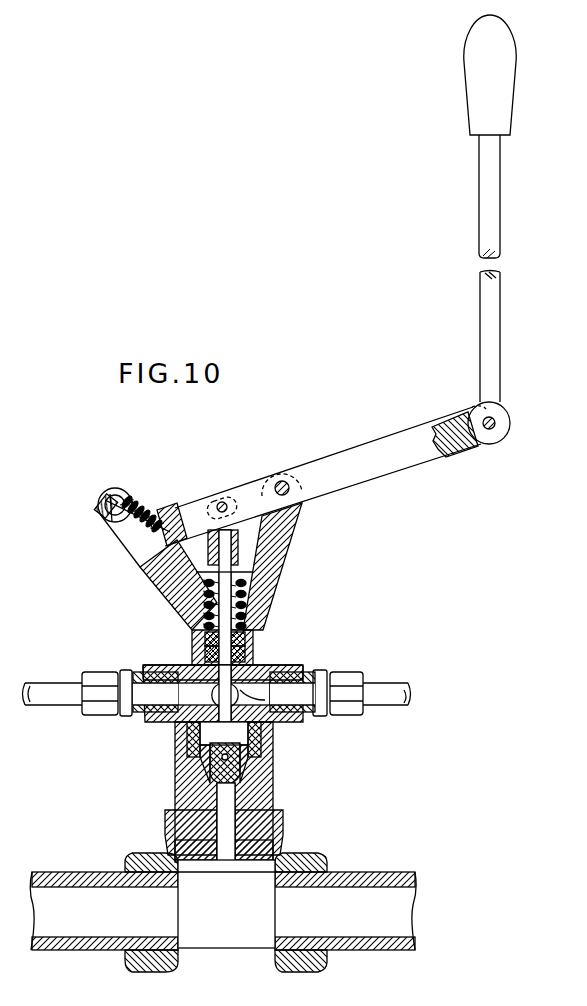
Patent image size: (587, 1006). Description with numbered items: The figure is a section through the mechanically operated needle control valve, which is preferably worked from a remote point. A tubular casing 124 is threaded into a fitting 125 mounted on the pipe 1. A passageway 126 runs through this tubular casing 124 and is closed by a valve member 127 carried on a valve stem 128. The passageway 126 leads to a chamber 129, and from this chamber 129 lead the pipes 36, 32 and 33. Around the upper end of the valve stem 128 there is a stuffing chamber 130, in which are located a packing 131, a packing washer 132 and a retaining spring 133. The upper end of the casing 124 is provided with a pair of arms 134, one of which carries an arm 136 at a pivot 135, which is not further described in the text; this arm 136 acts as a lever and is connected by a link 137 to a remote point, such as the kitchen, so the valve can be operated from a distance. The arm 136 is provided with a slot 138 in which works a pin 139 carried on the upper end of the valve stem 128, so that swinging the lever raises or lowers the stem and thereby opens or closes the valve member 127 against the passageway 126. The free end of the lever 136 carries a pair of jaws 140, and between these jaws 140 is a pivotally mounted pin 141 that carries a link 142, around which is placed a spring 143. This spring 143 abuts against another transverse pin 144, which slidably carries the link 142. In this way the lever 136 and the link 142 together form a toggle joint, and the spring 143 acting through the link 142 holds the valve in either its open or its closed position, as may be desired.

The pipe 1 is at (66, 873).
The pipe 32 is at (40, 706).
The pipe 33 is at (272, 728).
The pipe 36 is at (393, 706).
The tubular casing 124 is at (183, 791).
The fitting 125 is at (166, 820).
The passageway 126 is at (236, 796).
The valve member 127 is at (195, 752).
The valve stem 128 is at (262, 745).
The chamber 129 is at (190, 740).
The stuffing chamber 130 is at (245, 592).
The packing 131 is at (255, 653).
The packing washer 132 is at (255, 640).
The retaining spring 133 is at (250, 606).
The arms 134 is at (285, 545).
The pivot pin 135 is at (290, 493).
The arm 136 is at (372, 468).
The link 137 is at (497, 195).
The slot 138 is at (279, 483).
The pin 139 is at (224, 501).
The jaws 140 is at (150, 562).
The pin 141 is at (177, 514).
The link 142 is at (97, 503).
The spring 143 is at (144, 504).
The transverse pin 144 is at (109, 496).